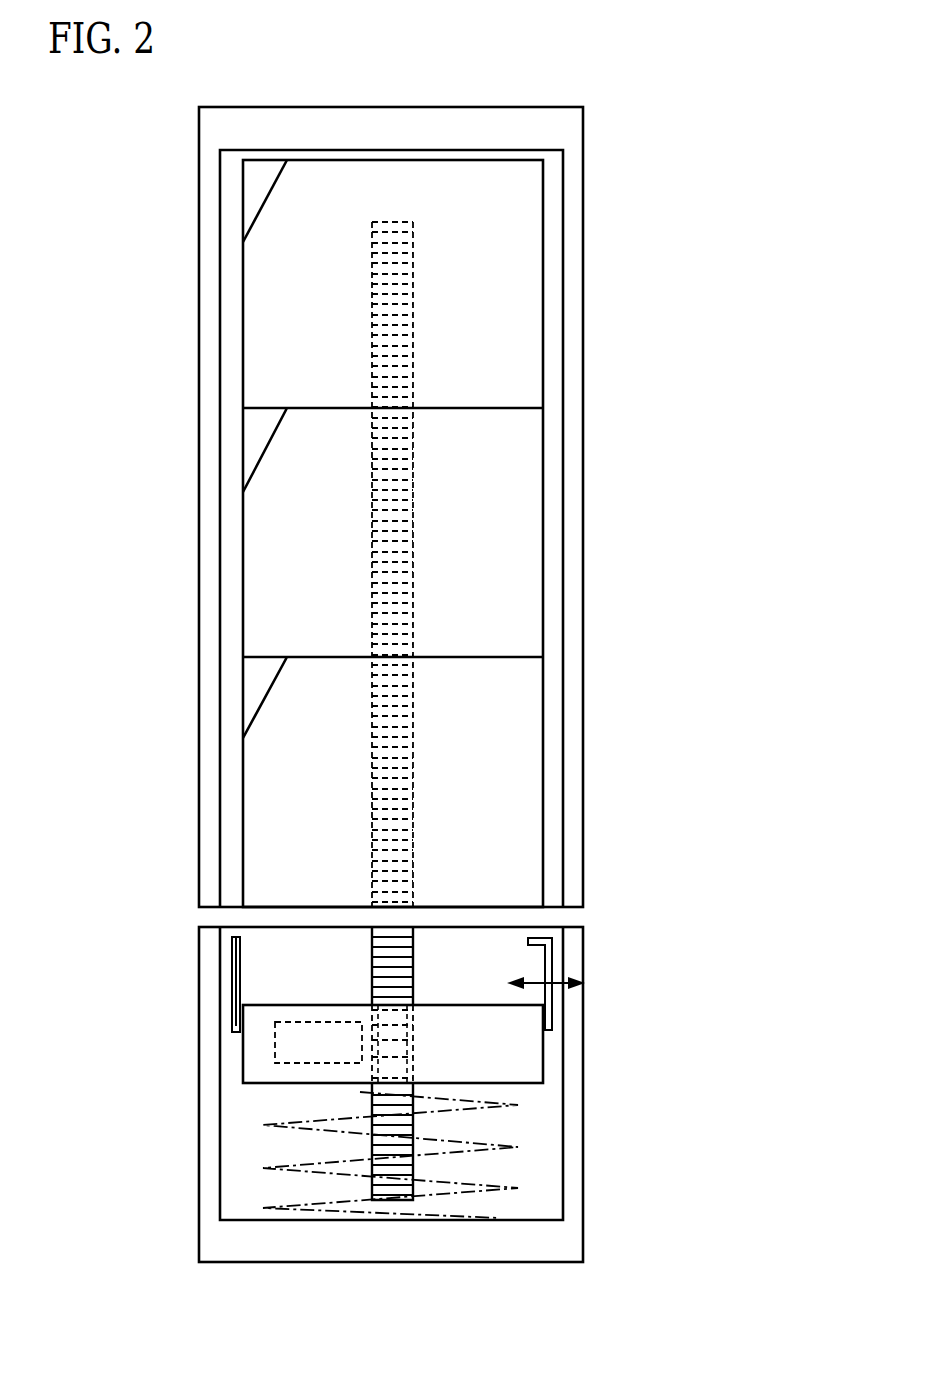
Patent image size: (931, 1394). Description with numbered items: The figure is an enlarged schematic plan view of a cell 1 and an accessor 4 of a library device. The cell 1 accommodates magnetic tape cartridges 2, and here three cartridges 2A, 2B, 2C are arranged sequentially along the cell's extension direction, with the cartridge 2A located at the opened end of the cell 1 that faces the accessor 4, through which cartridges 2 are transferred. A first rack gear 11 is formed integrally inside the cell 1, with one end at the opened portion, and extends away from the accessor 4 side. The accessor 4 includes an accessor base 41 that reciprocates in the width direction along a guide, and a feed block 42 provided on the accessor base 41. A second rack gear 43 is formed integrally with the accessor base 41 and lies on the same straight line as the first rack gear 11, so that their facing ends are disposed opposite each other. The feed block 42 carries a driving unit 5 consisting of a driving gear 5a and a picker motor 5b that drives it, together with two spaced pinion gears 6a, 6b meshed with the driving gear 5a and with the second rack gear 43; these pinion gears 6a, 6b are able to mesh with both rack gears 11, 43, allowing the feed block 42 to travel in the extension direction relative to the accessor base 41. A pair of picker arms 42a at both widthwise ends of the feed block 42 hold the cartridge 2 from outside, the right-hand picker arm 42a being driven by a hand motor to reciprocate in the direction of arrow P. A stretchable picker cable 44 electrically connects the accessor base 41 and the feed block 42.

The cell 1 is at (557, 98).
The magnetic tape cartridge 2 is at (305, 533).
The cartridge 2A is at (268, 780).
The cartridge 2B is at (268, 535).
The cartridge 2C is at (268, 292).
The first rack gear 11 is at (421, 729).
The accessor 4 is at (445, 1094).
The accessor base 41 is at (532, 1202).
The feed block 42 is at (550, 1062).
The picker arm 42a is at (232, 960).
The second rack gear 43 is at (422, 951).
The picker cable 44 is at (337, 1203).
The driving unit 5 is at (286, 1101).
The driving gear 5a is at (387, 1057).
The picker motor 5b is at (275, 1043).
The pinion gear 6a is at (413, 1015).
The pinion gear 6b is at (413, 1075).
The arrow P (width direction of picker arm movement) P is at (562, 995).